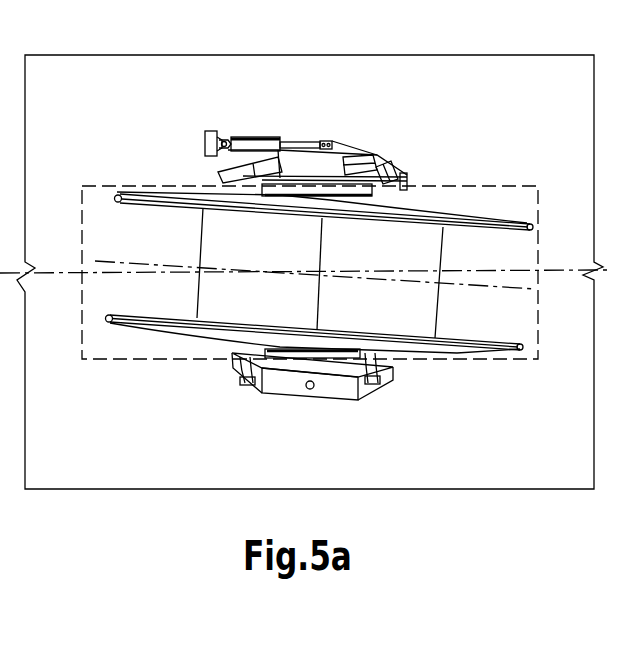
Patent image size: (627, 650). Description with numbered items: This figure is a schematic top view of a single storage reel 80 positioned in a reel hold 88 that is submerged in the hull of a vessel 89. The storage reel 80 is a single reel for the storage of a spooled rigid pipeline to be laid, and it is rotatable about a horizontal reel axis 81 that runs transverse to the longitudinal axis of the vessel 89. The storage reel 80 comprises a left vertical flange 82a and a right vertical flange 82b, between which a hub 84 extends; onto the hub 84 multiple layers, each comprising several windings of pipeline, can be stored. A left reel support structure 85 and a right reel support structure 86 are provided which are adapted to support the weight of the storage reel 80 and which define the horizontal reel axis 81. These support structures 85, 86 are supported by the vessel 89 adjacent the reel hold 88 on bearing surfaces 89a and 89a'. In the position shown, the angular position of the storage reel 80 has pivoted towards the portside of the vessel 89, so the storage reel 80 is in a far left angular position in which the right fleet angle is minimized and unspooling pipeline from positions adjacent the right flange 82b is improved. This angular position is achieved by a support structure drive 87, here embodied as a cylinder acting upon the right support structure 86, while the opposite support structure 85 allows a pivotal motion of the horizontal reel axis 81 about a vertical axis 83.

The storage reel 80 is at (133, 137).
The horizontal reel axis 81 is at (318, 305).
The left vertical flange 82a is at (452, 215).
The right vertical flange 82b is at (462, 350).
The vertical axis 83 is at (311, 390).
The hub 84 is at (320, 273).
The left reel support structure 85 is at (345, 388).
The right reel support structure 86 is at (365, 155).
The support structure drive 87 is at (272, 140).
The reel hold 88 is at (310, 275).
The vessel 89 is at (313, 276).
The bearing surface 89a is at (326, 407).
The bearing surface 89a' is at (339, 132).